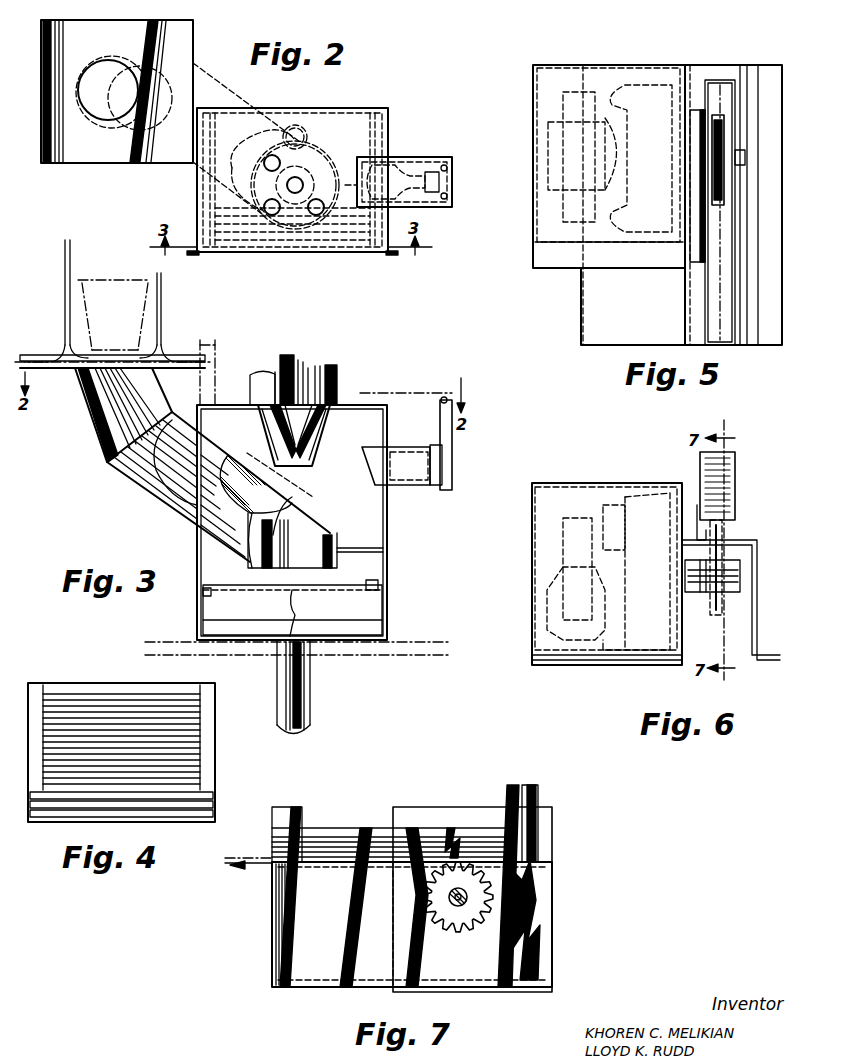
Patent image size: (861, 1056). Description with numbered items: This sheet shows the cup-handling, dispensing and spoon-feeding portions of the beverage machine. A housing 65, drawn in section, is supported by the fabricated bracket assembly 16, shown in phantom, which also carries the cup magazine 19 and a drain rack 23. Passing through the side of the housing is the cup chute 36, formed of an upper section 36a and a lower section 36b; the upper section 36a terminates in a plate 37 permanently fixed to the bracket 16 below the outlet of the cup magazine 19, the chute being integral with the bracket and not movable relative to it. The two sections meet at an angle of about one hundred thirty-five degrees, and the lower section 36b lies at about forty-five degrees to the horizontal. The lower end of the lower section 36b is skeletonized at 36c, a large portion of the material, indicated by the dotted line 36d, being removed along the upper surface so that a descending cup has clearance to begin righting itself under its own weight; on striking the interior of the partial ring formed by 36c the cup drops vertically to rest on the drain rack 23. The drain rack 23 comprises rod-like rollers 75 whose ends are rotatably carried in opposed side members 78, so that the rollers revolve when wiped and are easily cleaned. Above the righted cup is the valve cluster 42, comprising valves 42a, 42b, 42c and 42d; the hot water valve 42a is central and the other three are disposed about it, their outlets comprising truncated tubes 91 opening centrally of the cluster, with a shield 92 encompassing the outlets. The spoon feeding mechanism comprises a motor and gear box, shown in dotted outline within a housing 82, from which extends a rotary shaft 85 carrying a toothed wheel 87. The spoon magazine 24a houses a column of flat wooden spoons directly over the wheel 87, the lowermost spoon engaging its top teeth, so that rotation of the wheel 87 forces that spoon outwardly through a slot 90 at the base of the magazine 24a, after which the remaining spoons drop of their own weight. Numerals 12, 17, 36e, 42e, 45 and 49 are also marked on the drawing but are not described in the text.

In FIG. 5, the cabinet housing 12 is at (572, 245).
In FIG. 3, the bracket assembly 16 is at (204, 342).
In FIG. 5, the slide guide channel 17 is at (700, 172).
In FIG. 3, the cup magazine 19 is at (88, 262).
In FIG. 3, the drain rack 23 is at (232, 578).
In FIG. 4, the drain rack 23 is at (115, 680).
In FIG. 6, the spoon magazine 24a is at (738, 474).
In FIG. 7, the spoon magazine 24a is at (270, 832).
In FIG. 3, the cup chute 36 is at (186, 465).
In FIG. 3, the upper section 36a is at (98, 440).
In FIG. 3, the lower section 36b is at (140, 480).
In FIG. 3, the skeletonized lower end 36c is at (337, 533).
In FIG. 3, the cut-out portion 36d is at (305, 512).
In FIG. 3, the chute baffle 36e is at (276, 520).
In FIG. 3, the plate 37 is at (66, 376).
In FIG. 3, the valve cluster 42 is at (307, 394).
In FIG. 2, the hot water valve 42a is at (298, 183).
In FIG. 3, the hot water valve 42a is at (290, 355).
In FIG. 2, the valve 42b is at (318, 212).
In FIG. 3, the valve 42b is at (338, 392).
In FIG. 2, the valve 42c is at (276, 212).
In FIG. 2, the valve 42d is at (270, 160).
In FIG. 3, the rotor vane 42e is at (248, 385).
In FIG. 3, the motor bracket 45 is at (405, 485).
In FIG. 2, the drain pipe 49 is at (296, 135).
In FIG. 3, the drain pipe 49 is at (312, 700).
In FIG. 2, the housing 65 is at (388, 147).
In FIG. 3, the housing 65 is at (387, 592).
In FIG. 3, the rollers 75 is at (288, 600).
In FIG. 3, the side members 78 is at (205, 628).
In FIG. 4, the side members 78 is at (216, 765).
In FIG. 6, the housing 82 is at (590, 668).
In FIG. 7, the housing 82 is at (446, 807).
In FIG. 6, the rotary shaft 85 is at (738, 585).
In FIG. 7, the rotary shaft 85 is at (450, 899).
In FIG. 6, the toothed wheel 87 is at (716, 612).
In FIG. 7, the toothed wheel 87 is at (468, 934).
In FIG. 6, the slot 90 is at (730, 535).
In FIG. 7, the slot 90 is at (265, 866).
In FIG. 3, the truncated tubes 91 is at (306, 440).
In FIG. 3, the shield 92 is at (322, 432).